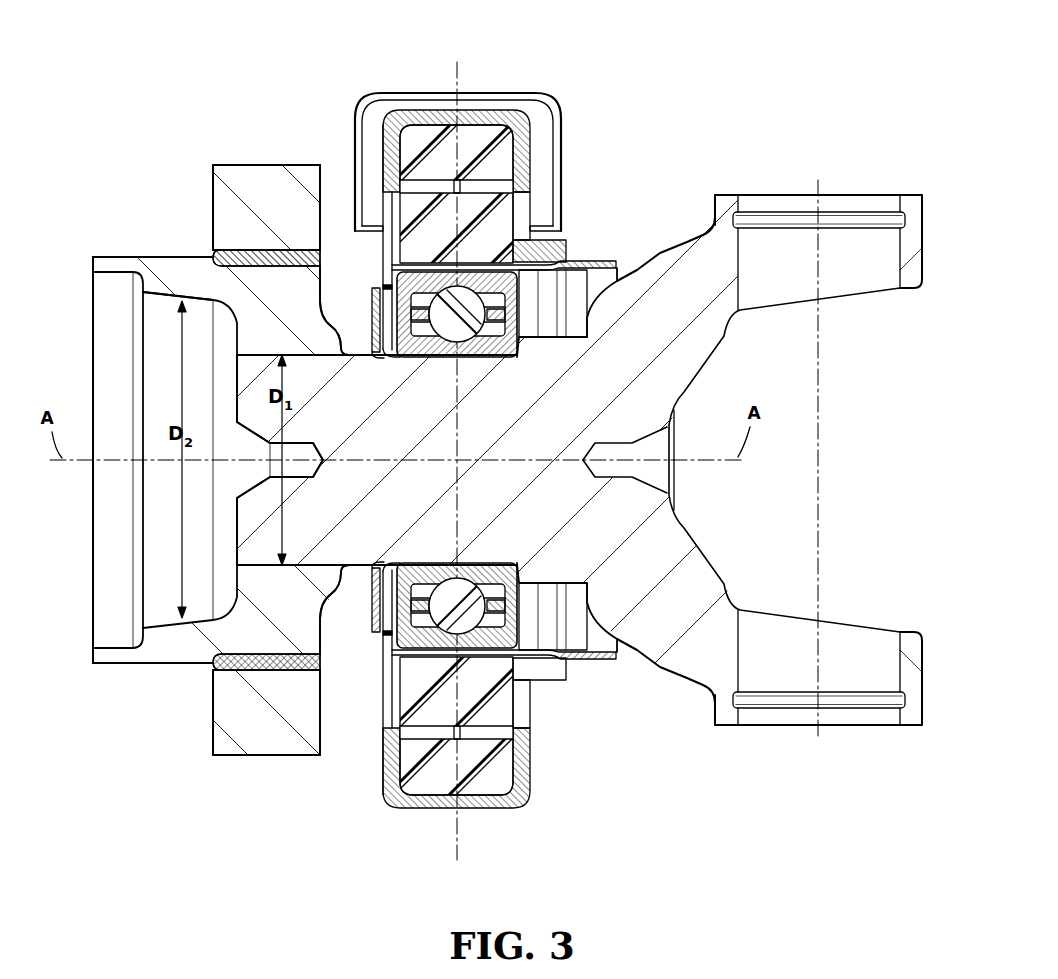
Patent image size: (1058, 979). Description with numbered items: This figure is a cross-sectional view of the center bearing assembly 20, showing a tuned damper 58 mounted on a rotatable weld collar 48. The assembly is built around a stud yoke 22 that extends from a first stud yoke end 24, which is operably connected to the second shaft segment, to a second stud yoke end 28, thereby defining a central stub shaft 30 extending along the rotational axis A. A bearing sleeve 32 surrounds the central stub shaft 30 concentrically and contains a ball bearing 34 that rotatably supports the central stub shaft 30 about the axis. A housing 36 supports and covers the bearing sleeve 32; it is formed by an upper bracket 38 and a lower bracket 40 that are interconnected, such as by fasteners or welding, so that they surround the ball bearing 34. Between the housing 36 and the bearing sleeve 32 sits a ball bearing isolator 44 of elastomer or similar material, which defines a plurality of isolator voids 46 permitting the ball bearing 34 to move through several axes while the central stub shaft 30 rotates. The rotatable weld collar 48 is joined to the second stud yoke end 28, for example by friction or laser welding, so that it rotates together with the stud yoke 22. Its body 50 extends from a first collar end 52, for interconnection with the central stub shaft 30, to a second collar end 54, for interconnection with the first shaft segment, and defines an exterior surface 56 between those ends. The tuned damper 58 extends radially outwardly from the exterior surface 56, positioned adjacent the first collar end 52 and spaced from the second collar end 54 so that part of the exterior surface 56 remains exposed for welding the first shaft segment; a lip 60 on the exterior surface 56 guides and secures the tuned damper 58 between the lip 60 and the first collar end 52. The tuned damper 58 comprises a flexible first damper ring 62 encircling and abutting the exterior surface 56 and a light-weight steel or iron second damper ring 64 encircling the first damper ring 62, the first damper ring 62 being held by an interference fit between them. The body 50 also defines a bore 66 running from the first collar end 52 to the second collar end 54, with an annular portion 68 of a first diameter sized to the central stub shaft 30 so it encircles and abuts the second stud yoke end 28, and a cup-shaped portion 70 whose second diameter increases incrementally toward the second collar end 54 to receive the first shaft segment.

The center bearing assembly 20 is at (716, 78).
The stud yoke 22 is at (696, 682).
The first stud yoke end 24 is at (920, 200).
The second stud yoke end 28 is at (237, 562).
The central stub shaft 30 is at (352, 568).
The bearing sleeve 32 is at (595, 258).
The ball bearing 34 is at (492, 302).
The housing 36 is at (500, 92).
The upper bracket 38 is at (410, 110).
The lower bracket 40 is at (492, 810).
The ball bearing isolator 44 is at (421, 785).
The isolator voids 46 is at (531, 784).
The rotatable weld collar 48 is at (150, 256).
The body 50 is at (208, 262).
The first collar end 52 is at (333, 298).
The second collar end 54 is at (92, 260).
The exterior surface 56 is at (185, 256).
The tuned damper 58 is at (262, 165).
The lip 60 is at (226, 668).
The first damper ring 62 is at (240, 672).
The second damper ring 64 is at (288, 738).
The bore 66 is at (160, 296).
The annular portion 68 is at (238, 506).
The cup-shaped portion 70 is at (117, 636).